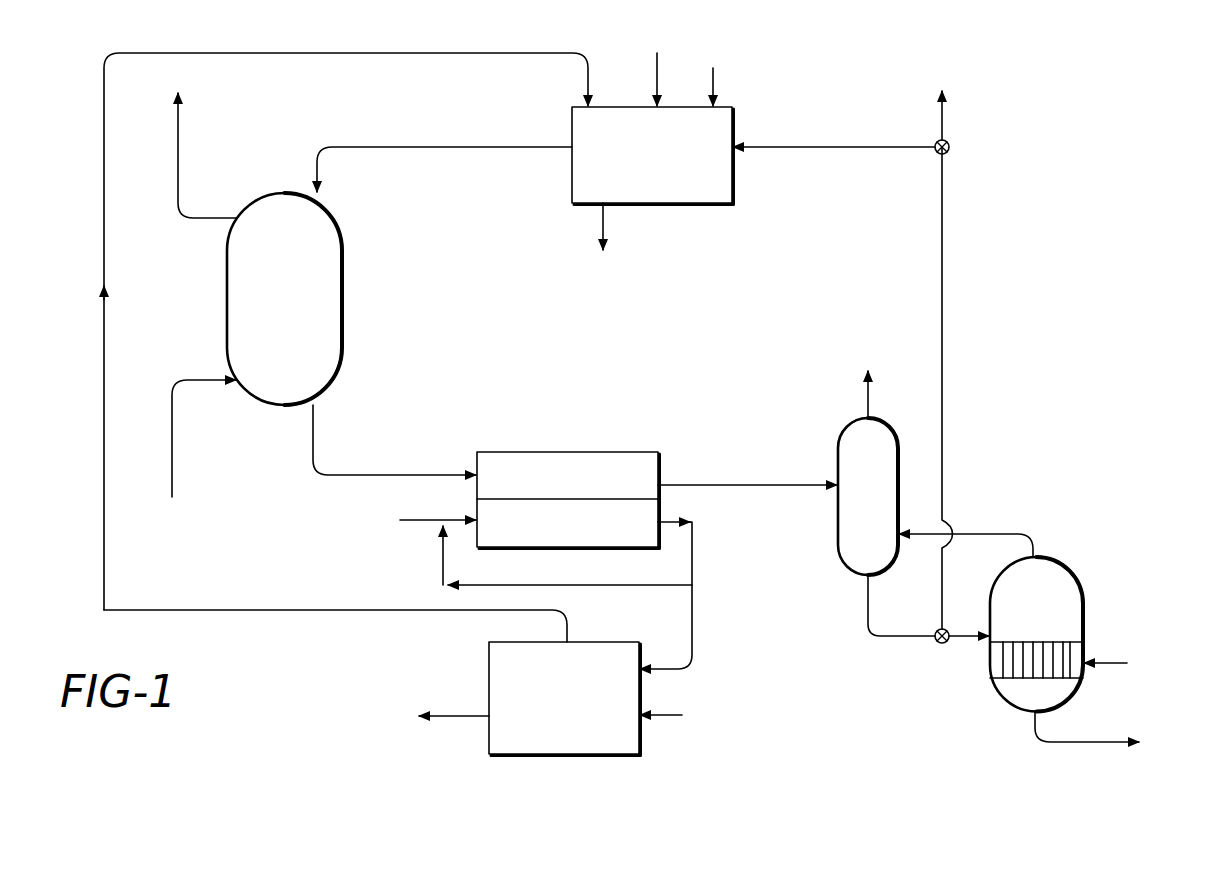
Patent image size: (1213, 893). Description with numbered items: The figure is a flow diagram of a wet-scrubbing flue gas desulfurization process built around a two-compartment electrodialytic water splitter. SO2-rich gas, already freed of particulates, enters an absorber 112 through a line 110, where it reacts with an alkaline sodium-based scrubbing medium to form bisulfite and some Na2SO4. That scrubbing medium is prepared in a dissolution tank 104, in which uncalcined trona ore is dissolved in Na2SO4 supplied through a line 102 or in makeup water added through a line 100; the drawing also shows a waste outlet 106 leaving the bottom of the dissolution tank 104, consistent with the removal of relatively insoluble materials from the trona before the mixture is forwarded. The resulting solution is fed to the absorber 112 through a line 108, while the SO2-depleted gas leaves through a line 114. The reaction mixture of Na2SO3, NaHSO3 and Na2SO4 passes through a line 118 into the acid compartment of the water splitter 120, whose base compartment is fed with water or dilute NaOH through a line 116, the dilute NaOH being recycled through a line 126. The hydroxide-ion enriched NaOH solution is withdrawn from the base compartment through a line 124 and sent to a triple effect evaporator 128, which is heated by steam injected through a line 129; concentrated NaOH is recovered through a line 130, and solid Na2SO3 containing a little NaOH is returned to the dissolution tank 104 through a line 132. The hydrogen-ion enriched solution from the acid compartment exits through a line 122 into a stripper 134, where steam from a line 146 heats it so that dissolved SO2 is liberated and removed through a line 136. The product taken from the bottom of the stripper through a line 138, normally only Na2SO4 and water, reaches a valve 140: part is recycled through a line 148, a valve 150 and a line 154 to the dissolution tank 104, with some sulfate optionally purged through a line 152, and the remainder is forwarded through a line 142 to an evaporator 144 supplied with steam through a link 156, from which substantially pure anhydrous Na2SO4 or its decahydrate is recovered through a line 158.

The makeup water line 100 is at (713, 82).
The Na2SO4 line 102 is at (655, 78).
The dissolution tank 104 is at (734, 129).
The waste outlet line 106 is at (604, 222).
The scrubbing medium line 108 is at (478, 126).
The SO2-rich gas line 110 is at (172, 476).
The absorber 112 is at (343, 286).
The SO2-depleted gas line 114 is at (178, 173).
The base compartment feed line 116 is at (406, 500).
The reaction mixture line 118 is at (346, 475).
The two-compartment electrodialytic water splitter 120 is at (561, 440).
The acid compartment outlet line 122 is at (758, 462).
The base compartment outlet line 124 is at (692, 552).
The dilute NaOH recycle line 126 is at (526, 572).
The triple effect evaporator 128 is at (605, 640).
The steam line 129 is at (662, 718).
The concentrated NaOH line 130 is at (457, 690).
The Na2SO3 recycle line 132 is at (468, 36).
The stripper 134 is at (842, 432).
The SO2 outlet line 136 is at (868, 402).
The stripper bottoms line 138 is at (868, 614).
The valve 140 is at (938, 646).
The evaporator feed line 142 is at (966, 644).
The evaporator 144 is at (1083, 600).
The stripper steam line 146 is at (984, 534).
The Na2SO4 recycle line 148 is at (945, 372).
The valve 150 is at (950, 150).
The purge line 152 is at (944, 116).
The dissolution tank recycle line 154 is at (858, 128).
The steam link 156 is at (1113, 664).
The Na2SO4 product line 158 is at (1099, 742).